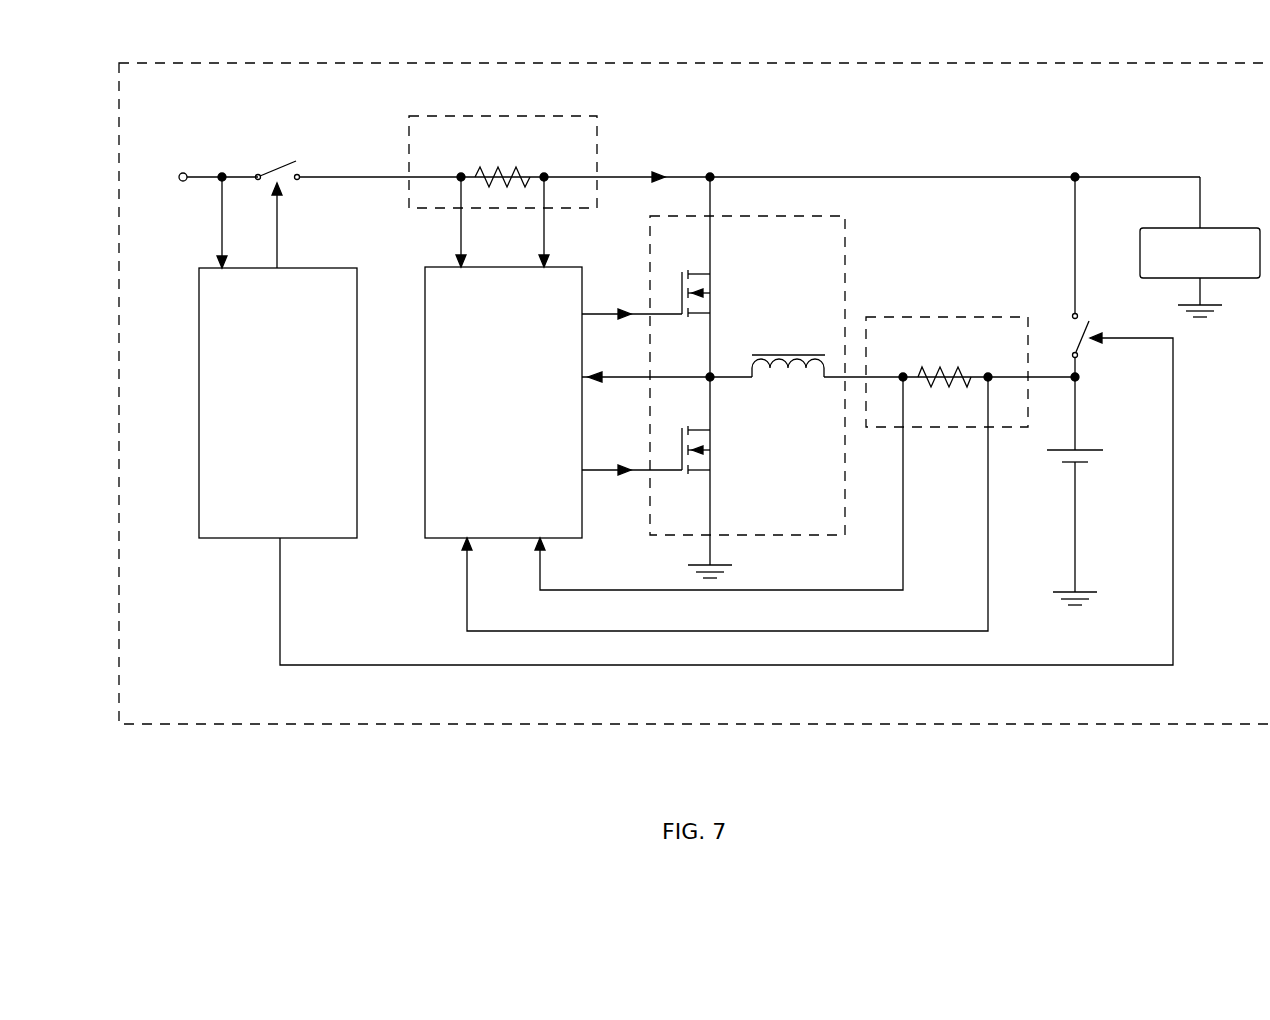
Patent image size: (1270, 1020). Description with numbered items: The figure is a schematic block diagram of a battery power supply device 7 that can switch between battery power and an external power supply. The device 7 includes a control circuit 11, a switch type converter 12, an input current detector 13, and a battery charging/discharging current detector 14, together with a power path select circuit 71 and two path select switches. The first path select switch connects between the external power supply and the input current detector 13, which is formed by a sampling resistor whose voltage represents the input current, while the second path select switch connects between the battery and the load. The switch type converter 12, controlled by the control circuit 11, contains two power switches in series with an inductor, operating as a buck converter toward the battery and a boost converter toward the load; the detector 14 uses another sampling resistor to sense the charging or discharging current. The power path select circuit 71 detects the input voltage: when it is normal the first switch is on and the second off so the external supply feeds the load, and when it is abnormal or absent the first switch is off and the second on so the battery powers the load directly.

The battery power supply device 7 is at (694, 393).
The power path select circuit 71 is at (278, 403).
The control circuit 11 is at (503, 402).
The switch type converter 12 is at (747, 375).
The input current detector 13 is at (503, 162).
The battery charging/discharging current detector 14 is at (947, 372).